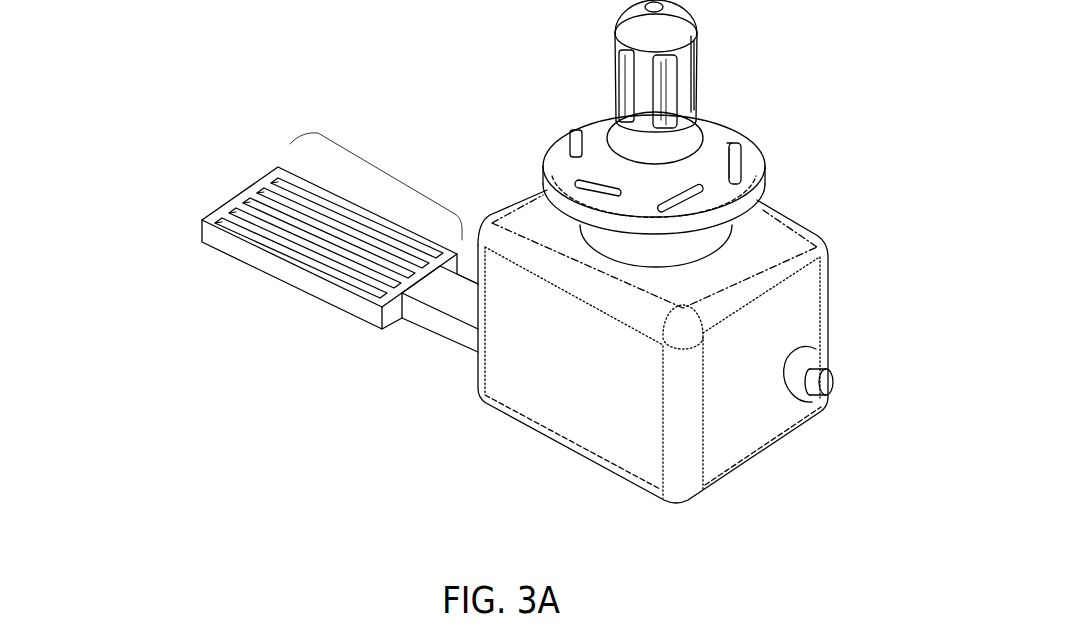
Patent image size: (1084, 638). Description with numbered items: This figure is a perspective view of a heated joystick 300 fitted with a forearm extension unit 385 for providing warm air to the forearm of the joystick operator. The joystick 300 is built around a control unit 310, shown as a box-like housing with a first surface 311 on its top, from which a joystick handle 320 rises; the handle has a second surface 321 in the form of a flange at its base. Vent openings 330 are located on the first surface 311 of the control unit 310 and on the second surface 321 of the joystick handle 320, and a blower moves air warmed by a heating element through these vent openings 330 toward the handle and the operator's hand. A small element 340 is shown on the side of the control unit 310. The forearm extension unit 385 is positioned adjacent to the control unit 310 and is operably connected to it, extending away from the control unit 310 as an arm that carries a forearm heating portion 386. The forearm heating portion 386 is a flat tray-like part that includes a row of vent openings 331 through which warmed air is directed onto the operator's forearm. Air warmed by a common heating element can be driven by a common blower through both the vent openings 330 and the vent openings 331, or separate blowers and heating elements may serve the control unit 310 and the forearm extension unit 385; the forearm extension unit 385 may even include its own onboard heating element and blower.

The joystick 300 is at (228, 66).
The control unit 310 is at (585, 407).
The first surface 311 is at (763, 233).
The joystick handle 320 is at (682, 72).
The second surface 321 is at (713, 157).
The vent openings 330 is at (617, 54).
The vent openings 331 is at (228, 218).
The button 340 is at (833, 384).
The forearm extension unit 385 is at (453, 333).
The forearm heating portion 386 is at (389, 172).